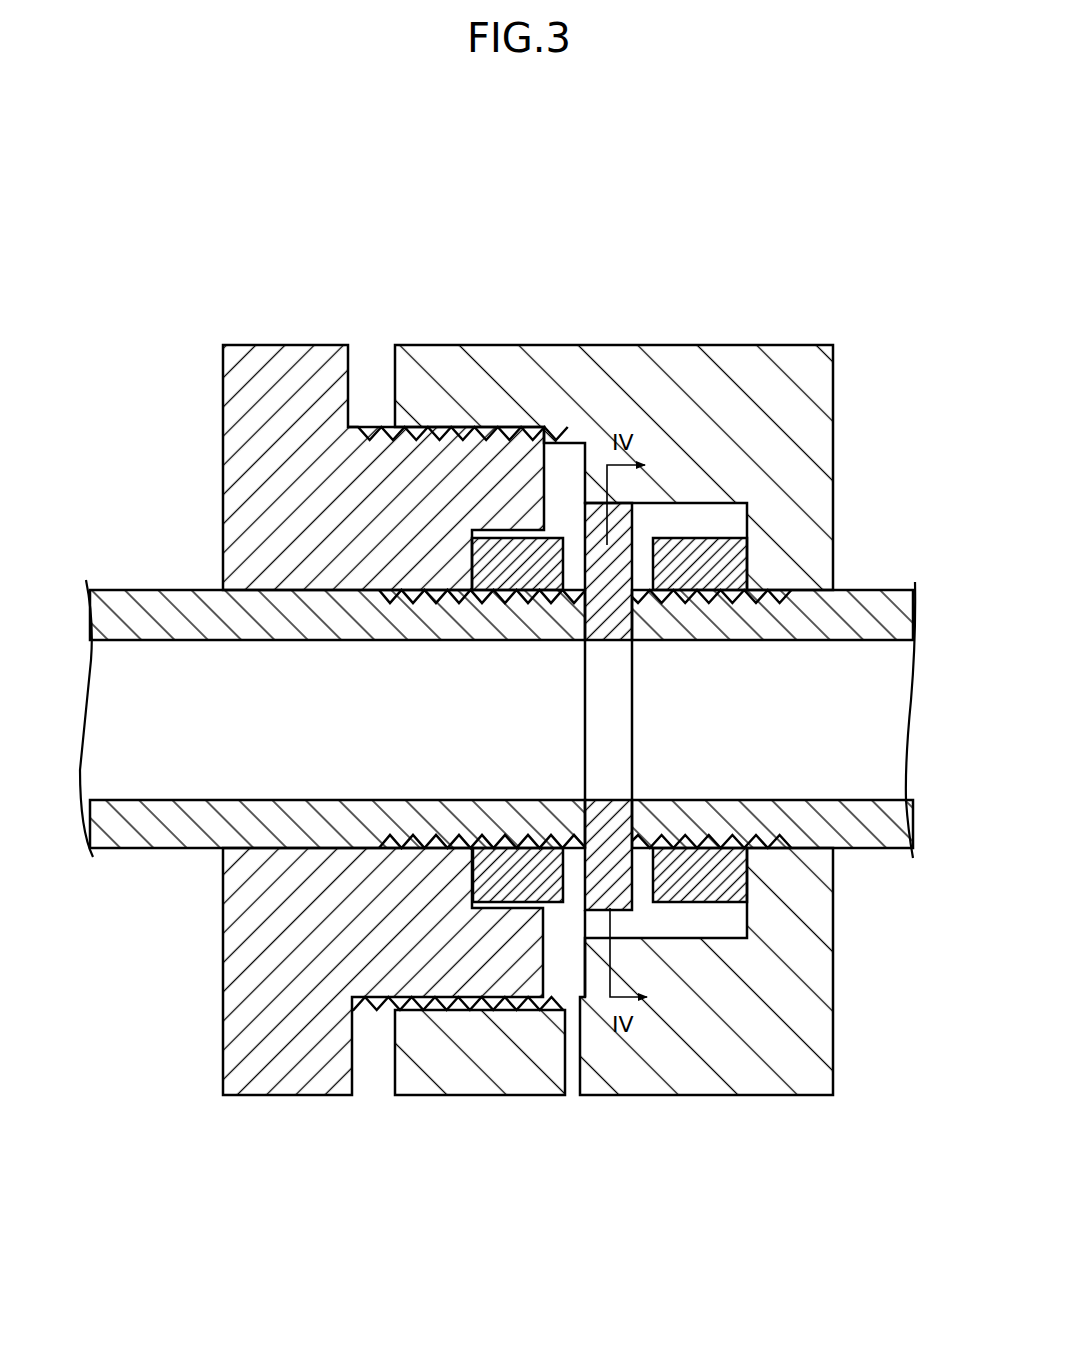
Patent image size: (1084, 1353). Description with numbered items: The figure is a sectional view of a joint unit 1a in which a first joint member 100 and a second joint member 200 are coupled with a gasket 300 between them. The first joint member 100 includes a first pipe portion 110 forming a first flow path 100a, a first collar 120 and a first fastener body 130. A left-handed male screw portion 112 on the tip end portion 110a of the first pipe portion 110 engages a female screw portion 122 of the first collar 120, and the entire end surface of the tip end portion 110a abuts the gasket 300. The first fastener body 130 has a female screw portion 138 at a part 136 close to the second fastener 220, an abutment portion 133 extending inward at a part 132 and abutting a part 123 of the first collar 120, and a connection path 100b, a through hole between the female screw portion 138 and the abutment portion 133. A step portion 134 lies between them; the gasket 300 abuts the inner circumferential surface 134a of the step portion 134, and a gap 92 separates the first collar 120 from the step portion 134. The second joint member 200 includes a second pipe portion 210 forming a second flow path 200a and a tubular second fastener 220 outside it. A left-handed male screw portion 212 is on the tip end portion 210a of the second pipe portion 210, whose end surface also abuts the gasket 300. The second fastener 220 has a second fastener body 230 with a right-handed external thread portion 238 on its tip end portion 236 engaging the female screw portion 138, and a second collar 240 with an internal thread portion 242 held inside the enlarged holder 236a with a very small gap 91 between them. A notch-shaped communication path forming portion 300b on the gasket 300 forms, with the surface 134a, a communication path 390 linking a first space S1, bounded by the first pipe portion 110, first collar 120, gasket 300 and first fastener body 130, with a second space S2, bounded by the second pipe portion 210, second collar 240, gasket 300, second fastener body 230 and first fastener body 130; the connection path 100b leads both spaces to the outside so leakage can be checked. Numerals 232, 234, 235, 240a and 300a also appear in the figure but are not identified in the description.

The joint unit 1a is at (170, 123).
The first joint member 100 is at (900, 209).
The first flow path 100a is at (833, 739).
The connection path 100b is at (567, 1038).
The first pipe portion 110 is at (867, 590).
The tip end portion 110a is at (678, 812).
The male screw portion 112 is at (742, 601).
The first collar 120 is at (715, 537).
The female screw portion 122 is at (704, 601).
The part of the first collar 123 is at (808, 593).
The first fastener body 130 is at (690, 344).
The part of the first fastener body 132 is at (795, 1080).
The abutment portion 133 is at (760, 895).
The step portion 134 is at (600, 1050).
The inner circumferential surface 134a is at (592, 514).
The part of the first fastener body 136 is at (538, 1078).
The female screw portion 138 is at (455, 1006).
The second joint member 200 is at (397, 210).
The second flow path 200a is at (250, 739).
The second pipe portion 210 is at (132, 588).
The tip end portion 210a is at (521, 830).
The male screw portion 212 is at (537, 830).
The second fastener 220 is at (465, 257).
The second fastener body 230 is at (288, 398).
The nut body 232 is at (402, 684).
The nut outer portion 234 is at (345, 497).
The nut step face 235 is at (470, 900).
The tip end portion 236 is at (477, 503).
The holder 236a is at (571, 585).
The external thread portion 238 is at (374, 997).
The second collar 240 is at (498, 548).
The seal ring contact surface 240a is at (548, 594).
The internal thread portion 242 is at (487, 855).
The gasket 300 is at (584, 540).
The sleeve passage 300a is at (612, 757).
The communication path forming portion 300b is at (630, 940).
The communication path 390 is at (620, 930).
The gap 91 is at (556, 518).
The gap 92 is at (686, 515).
The first space S1 is at (710, 931).
The second space S2 is at (585, 946).